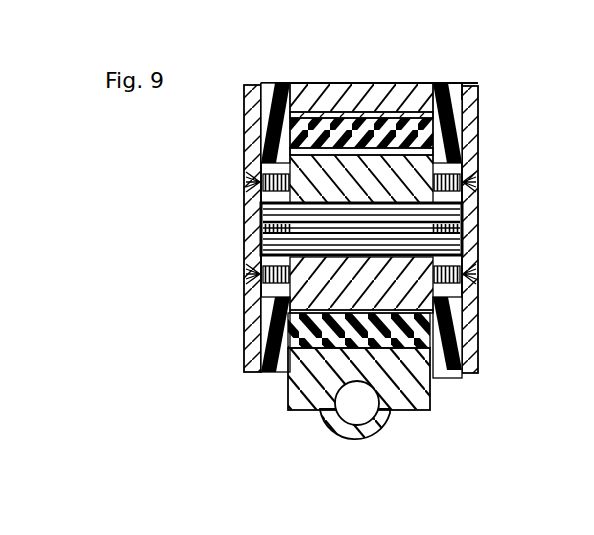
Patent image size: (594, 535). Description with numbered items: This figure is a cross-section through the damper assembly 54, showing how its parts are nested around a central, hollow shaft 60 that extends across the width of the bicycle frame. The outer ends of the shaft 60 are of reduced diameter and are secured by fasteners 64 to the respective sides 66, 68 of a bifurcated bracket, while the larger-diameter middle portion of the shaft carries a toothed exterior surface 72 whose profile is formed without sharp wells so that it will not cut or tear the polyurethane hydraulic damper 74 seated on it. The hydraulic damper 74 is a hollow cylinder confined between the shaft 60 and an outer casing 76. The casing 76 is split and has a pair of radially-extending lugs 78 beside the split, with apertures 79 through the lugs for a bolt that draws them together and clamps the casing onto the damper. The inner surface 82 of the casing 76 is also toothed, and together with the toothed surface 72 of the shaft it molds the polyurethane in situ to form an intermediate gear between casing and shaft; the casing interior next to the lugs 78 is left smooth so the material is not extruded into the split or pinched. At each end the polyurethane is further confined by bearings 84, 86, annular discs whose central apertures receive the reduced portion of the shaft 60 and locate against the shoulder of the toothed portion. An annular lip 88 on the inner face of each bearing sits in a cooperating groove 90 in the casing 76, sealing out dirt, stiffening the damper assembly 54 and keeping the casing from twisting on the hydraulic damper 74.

The damper assembly 54 is at (301, 62).
The central hollow shaft 60 is at (479, 308).
The fasteners 64 is at (243, 195).
The side of bifurcated bracket 66 is at (479, 111).
The side of bifurcated bracket 68 is at (243, 125).
The toothed exterior surface 72 is at (478, 148).
The hydraulic damper 74 is at (479, 346).
The outer casing 76 is at (373, 83).
The radially-extending lugs 78 is at (380, 444).
The apertures 79 is at (381, 410).
The inner surface of casing 82 is at (461, 85).
The bearing 84 is at (457, 378).
The bearing 86 is at (280, 376).
The annular lip 88 is at (293, 90).
The cooperating groove 90 is at (424, 84).